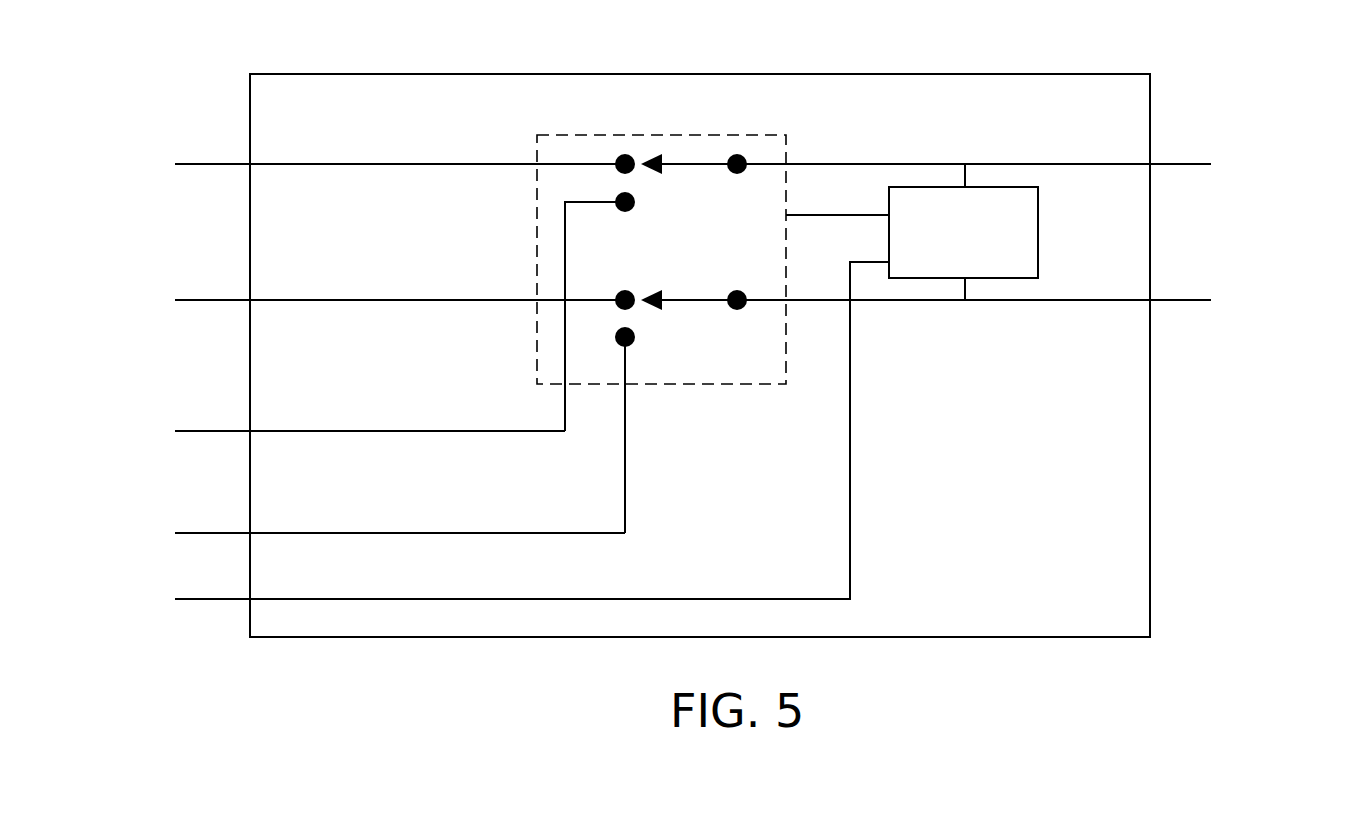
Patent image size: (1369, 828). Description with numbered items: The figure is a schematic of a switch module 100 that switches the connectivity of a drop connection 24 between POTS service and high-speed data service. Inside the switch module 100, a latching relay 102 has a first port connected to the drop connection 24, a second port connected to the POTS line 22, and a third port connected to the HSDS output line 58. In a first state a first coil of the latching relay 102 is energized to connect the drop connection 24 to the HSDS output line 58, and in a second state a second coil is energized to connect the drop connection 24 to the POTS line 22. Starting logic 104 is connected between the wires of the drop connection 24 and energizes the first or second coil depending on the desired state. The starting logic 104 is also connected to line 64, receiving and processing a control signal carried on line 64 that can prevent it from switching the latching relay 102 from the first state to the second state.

The switch module 100 is at (830, 52).
The POTS line 22 is at (185, 138).
The drop connection 24 is at (1175, 148).
The HSDS output line 58 is at (185, 402).
The latching relay 102 is at (740, 382).
The starting logic 104 is at (1038, 228).
The line 64 is at (850, 400).